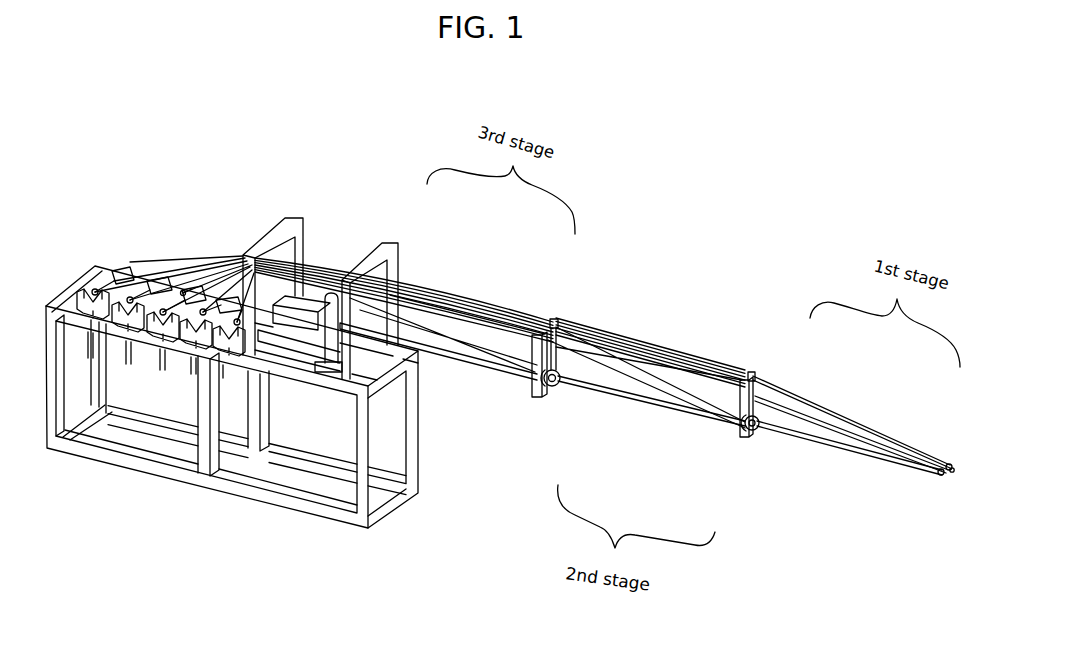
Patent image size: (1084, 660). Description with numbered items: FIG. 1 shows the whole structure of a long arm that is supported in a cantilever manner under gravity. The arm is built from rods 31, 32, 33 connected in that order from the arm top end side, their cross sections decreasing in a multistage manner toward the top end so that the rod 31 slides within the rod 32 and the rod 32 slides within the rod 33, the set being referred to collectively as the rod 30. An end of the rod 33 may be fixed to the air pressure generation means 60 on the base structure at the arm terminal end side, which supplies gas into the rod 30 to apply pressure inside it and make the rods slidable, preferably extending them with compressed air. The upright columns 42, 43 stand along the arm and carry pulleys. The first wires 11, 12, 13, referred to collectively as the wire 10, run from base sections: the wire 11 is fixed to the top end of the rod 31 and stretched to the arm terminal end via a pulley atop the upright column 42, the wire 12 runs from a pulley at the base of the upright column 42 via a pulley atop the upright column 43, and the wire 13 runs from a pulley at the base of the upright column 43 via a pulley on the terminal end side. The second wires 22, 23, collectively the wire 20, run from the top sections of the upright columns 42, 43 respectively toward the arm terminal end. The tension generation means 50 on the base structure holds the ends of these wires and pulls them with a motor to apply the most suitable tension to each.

The first wire 10 is at (651, 298).
The second wire 20 is at (604, 373).
The wire 11 is at (853, 416).
The wire 12 is at (688, 382).
The wire 13 is at (512, 337).
The wire 22 is at (604, 333).
The wire 23 is at (448, 293).
The rod 30 is at (656, 448).
The rod 31 is at (788, 437).
The rod 32 is at (588, 394).
The rod 33 is at (432, 358).
The upright column 42 is at (772, 394).
The upright column 43 is at (533, 396).
The tension generation means 50 is at (162, 244).
The air pressure generation means 60 is at (317, 303).